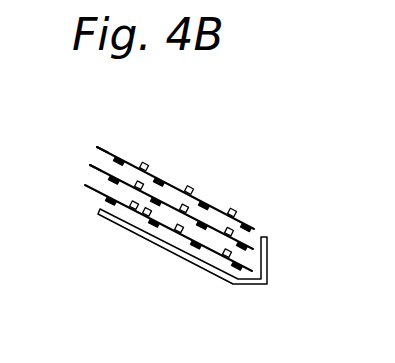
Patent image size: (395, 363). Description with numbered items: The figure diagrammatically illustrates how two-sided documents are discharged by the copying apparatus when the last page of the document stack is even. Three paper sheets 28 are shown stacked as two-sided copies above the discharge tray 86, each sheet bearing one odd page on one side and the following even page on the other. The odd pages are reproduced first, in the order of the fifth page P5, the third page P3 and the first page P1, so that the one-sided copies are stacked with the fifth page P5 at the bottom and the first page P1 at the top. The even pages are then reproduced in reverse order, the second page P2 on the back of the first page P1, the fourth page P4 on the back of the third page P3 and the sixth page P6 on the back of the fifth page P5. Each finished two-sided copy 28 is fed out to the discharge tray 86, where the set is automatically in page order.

The paper sheet 28 is at (216, 203).
The discharge tray 86 is at (210, 276).
The first page P1 is at (115, 158).
The second page P2 is at (98, 150).
The third page P3 is at (93, 161).
The fourth page P4 is at (112, 180).
The fifth page P5 is at (147, 210).
The sixth page P6 is at (180, 234).